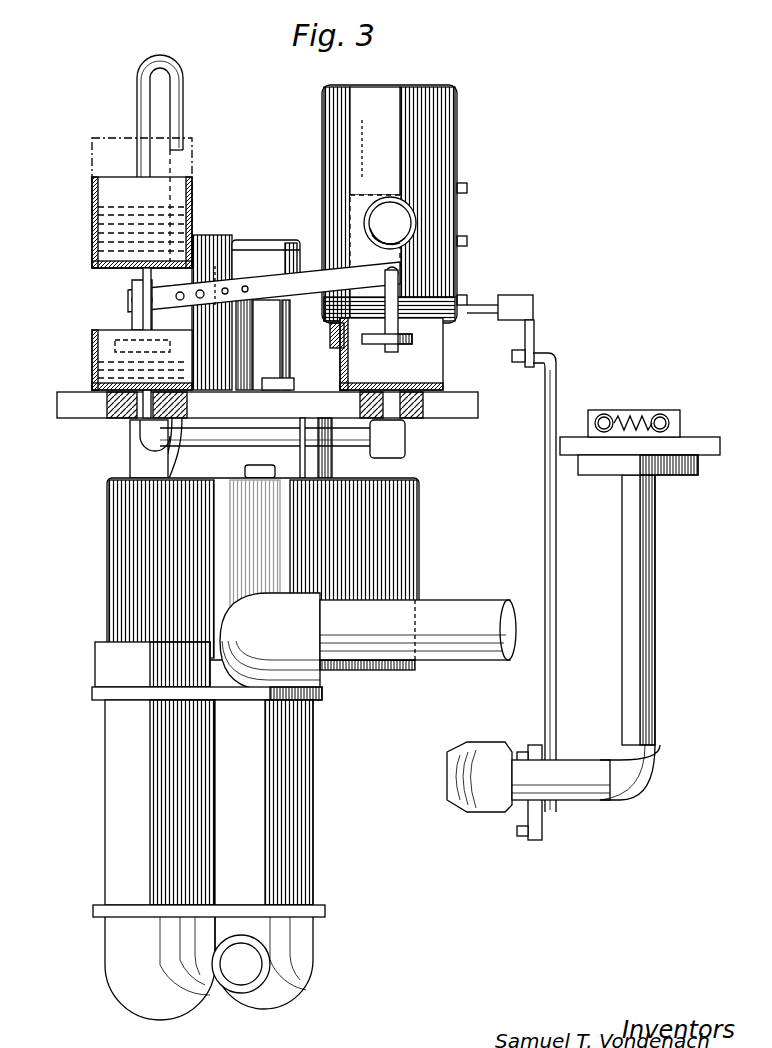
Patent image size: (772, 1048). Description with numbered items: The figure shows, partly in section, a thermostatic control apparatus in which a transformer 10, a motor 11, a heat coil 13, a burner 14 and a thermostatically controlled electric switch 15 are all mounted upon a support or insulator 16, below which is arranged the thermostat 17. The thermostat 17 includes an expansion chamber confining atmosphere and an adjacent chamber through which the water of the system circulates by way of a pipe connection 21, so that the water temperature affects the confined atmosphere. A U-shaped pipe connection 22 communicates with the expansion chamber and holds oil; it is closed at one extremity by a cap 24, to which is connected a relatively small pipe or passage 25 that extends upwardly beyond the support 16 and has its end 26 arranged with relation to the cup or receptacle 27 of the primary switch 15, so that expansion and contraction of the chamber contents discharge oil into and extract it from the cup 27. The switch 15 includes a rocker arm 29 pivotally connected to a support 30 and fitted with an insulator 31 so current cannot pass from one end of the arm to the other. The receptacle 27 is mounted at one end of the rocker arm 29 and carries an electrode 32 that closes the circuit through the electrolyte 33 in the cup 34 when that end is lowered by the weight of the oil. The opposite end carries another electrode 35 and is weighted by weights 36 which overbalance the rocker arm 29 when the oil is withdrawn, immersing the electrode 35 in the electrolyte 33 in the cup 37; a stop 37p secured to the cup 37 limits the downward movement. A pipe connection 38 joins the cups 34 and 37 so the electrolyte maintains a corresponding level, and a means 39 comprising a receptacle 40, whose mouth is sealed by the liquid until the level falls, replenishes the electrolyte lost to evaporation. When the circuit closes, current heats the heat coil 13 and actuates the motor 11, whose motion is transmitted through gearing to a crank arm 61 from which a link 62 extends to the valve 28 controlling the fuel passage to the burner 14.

The transformer 10 is at (220, 236).
The motor 11 is at (262, 240).
The heat coil 13 is at (642, 412).
The burner 14 is at (660, 468).
The thermostatically controlled electric switch 15 is at (263, 341).
The support or insulator 16 is at (255, 408).
The thermostat 17 is at (263, 569).
The pipe connection 21 is at (368, 641).
The pipe connection 22 is at (313, 748).
The cap 24 is at (207, 671).
The small pipe or passage 25 is at (183, 97).
The end of pipe 26 is at (100, 191).
The cup or receptacle 27 is at (192, 188).
The valve 28 is at (475, 815).
The rocker arm 29 is at (302, 264).
The support 30 is at (268, 376).
The insulator 31 is at (150, 291).
The electrode 32 is at (134, 322).
The electrolyte 33 is at (102, 368).
The cup 34 is at (92, 338).
The electrode 35 is at (412, 336).
The weights 36 is at (416, 223).
The cup 37 is at (437, 392).
The stop 37p is at (333, 345).
The pipe connection 38 is at (355, 450).
The liquid level maintaining means 39 is at (457, 137).
The receptacle 40 is at (375, 178).
The crank arm 61 is at (534, 318).
The link 62 is at (556, 553).